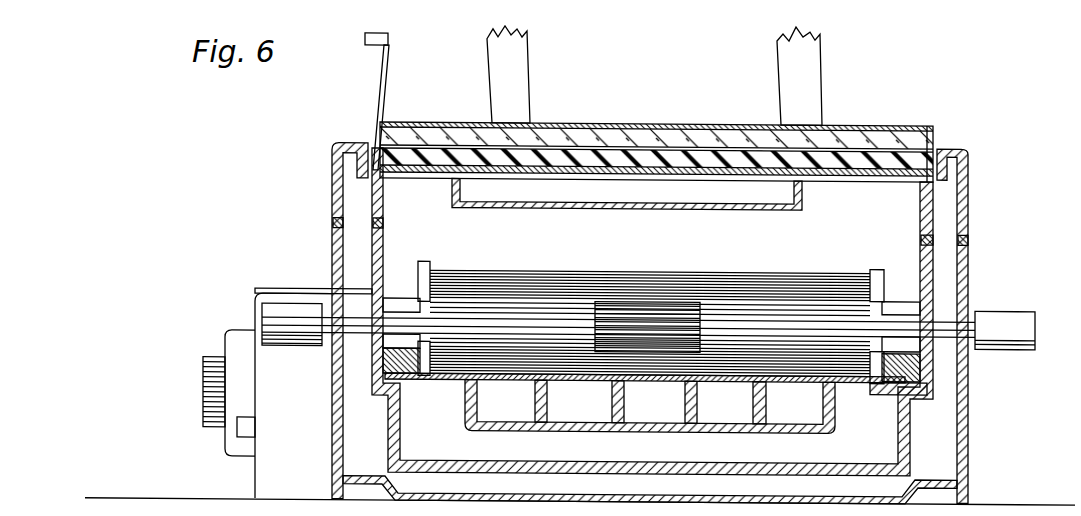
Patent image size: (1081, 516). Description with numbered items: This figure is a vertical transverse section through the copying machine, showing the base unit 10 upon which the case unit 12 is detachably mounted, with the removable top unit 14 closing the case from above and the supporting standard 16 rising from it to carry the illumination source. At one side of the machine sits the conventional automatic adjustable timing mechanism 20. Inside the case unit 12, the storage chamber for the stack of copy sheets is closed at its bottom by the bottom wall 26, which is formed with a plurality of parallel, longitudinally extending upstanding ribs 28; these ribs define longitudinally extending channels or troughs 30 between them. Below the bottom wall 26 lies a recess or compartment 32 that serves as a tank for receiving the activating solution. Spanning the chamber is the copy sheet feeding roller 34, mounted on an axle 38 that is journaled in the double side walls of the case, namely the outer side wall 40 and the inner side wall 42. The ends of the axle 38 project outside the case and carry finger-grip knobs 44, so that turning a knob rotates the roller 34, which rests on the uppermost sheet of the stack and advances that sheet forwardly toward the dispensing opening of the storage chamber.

The base unit 10 is at (924, 472).
The case unit 12 is at (978, 233).
The top unit 14 is at (858, 123).
The supporting standard 16 is at (522, 97).
The automatic adjustable timing mechanism 20 is at (287, 393).
The bottom wall 26 is at (461, 387).
The upstanding ribs 28 is at (541, 406).
The channels or troughs 30 is at (618, 406).
The compartment 32 is at (645, 448).
The feeding roller 34 is at (648, 328).
The axle 38 is at (792, 332).
The outer side wall 40 is at (343, 208).
The inner side wall 42 is at (380, 218).
The finger-grip knobs 44 is at (1012, 332).